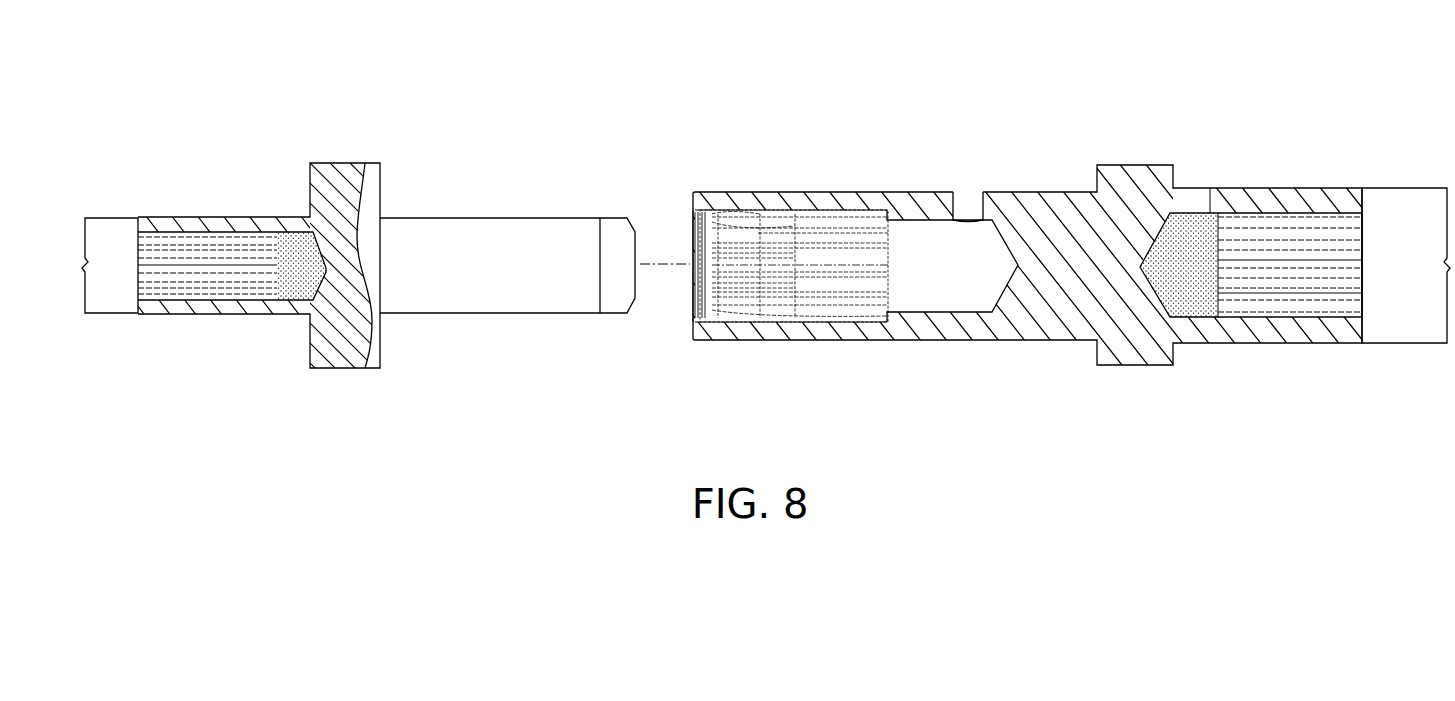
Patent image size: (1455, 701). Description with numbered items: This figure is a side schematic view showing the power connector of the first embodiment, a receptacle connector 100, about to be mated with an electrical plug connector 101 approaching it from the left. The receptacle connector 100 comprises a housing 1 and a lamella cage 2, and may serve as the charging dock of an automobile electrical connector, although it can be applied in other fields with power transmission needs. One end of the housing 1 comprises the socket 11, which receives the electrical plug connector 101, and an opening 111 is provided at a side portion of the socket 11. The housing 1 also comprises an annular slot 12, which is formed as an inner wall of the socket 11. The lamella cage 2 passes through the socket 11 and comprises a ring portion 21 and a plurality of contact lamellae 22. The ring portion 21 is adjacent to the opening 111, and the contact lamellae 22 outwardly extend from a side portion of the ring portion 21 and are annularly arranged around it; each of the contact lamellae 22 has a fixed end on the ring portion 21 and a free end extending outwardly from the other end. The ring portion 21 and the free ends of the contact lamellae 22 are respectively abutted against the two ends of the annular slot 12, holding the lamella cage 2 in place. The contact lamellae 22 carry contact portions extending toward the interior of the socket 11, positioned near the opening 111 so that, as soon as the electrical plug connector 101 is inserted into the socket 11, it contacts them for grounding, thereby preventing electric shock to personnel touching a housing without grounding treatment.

The receptacle connector 100 is at (1140, 129).
The electrical plug connector 101 is at (340, 143).
The housing 1 is at (1127, 350).
The socket 11 is at (938, 192).
The opening 111 is at (697, 222).
The annular slot 12 is at (811, 210).
The lamella cage 2 is at (767, 213).
The ring portion 21 is at (708, 297).
The contact lamellae 22 is at (803, 305).